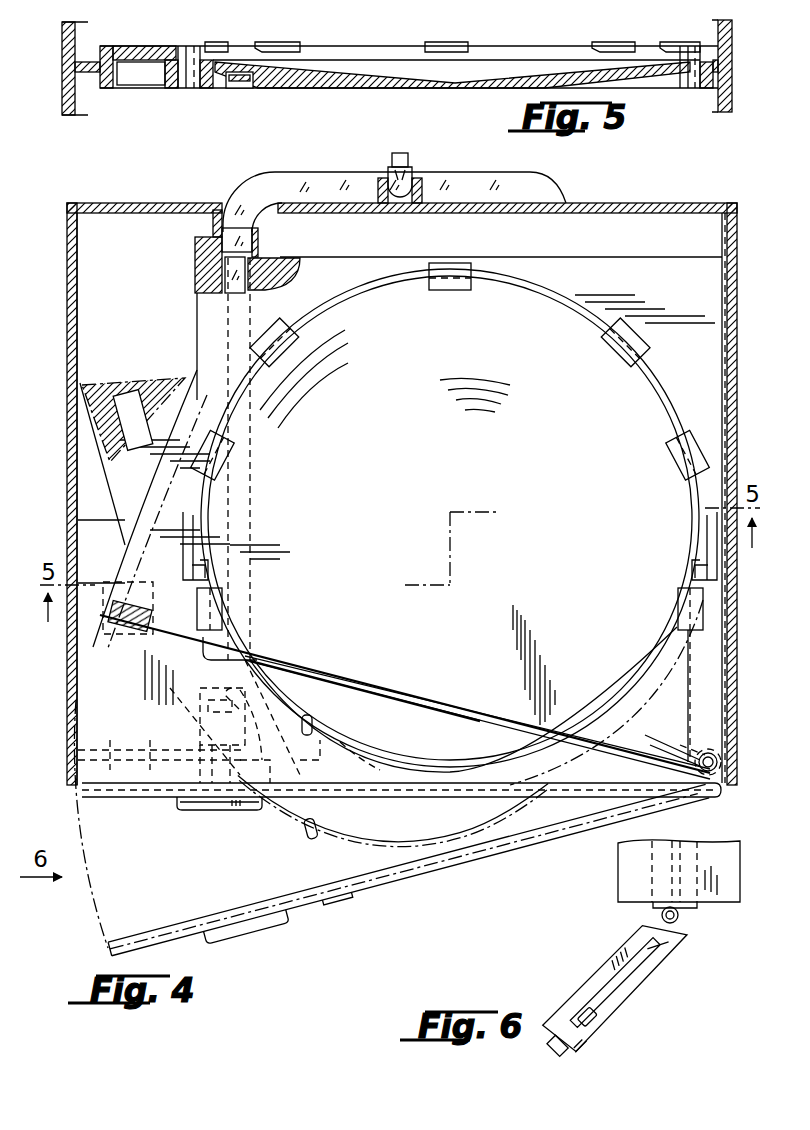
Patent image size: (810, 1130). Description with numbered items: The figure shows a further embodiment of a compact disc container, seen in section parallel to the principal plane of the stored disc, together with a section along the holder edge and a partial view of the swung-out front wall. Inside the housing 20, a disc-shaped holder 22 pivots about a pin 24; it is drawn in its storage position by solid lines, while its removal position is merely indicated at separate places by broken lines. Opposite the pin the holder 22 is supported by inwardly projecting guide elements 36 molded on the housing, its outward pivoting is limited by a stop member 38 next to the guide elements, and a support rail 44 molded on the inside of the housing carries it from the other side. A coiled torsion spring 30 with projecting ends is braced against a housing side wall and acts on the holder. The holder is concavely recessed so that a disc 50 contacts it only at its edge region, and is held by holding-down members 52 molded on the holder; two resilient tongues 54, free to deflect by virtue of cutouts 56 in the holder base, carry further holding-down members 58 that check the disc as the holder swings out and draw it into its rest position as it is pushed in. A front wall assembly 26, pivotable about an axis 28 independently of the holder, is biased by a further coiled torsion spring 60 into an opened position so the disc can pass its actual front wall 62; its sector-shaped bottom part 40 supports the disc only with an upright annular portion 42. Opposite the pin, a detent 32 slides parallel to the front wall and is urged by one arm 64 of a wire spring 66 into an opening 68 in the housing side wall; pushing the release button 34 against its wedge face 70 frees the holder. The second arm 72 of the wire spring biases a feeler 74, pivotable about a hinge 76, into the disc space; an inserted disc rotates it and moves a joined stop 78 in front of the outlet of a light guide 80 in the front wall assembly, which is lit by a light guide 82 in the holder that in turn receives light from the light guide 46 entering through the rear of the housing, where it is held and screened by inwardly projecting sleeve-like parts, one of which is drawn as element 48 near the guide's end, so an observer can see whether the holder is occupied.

In FIG. 5, the housing 20 is at (735, 102).
In FIG. 4, the housing 20 is at (695, 201).
In FIG. 6, the housing 20 is at (612, 866).
In FIG. 5, the holder 22 is at (500, 88).
In FIG. 4, the holder 22 is at (606, 255).
In FIG. 6, the holder 22 is at (700, 860).
In FIG. 4, the pin 24 is at (710, 750).
In FIG. 4, the front wall assembly 26 is at (374, 786).
In FIG. 6, the front wall assembly 26 is at (636, 978).
In FIG. 4, the axis 28 is at (250, 652).
In FIG. 4, the coiled torsion spring 30 is at (664, 745).
In FIG. 4, the detent 32 is at (110, 742).
In FIG. 6, the detent 32 is at (582, 1008).
In FIG. 4, the release button 34 is at (223, 803).
In FIG. 6, the release button 34 is at (549, 1048).
In FIG. 5, the guide elements 36 is at (88, 65).
In FIG. 4, the guide elements 36 is at (95, 526).
In FIG. 4, the stop member 38 is at (95, 430).
In FIG. 4, the sector-shaped bottom part 40 is at (410, 715).
In FIG. 4, the upright annular portion 42 is at (435, 768).
In FIG. 5, the support rail 44 is at (720, 66).
In FIG. 4, the support rail 44 is at (720, 232).
In FIG. 4, the light guide 46 is at (322, 188).
In FIG. 4, the light guide end 48 is at (253, 244).
In FIG. 4, the disc 50 is at (628, 692).
In FIG. 5, the holding-down members 52 is at (226, 42).
In FIG. 4, the holding-down members 52 is at (450, 288).
In FIG. 5, the resilient tongues 54 is at (194, 88).
In FIG. 4, the resilient tongues 54 is at (186, 546).
In FIG. 5, the cutouts 56 is at (184, 88).
In FIG. 4, the cutouts 56 is at (196, 520).
In FIG. 5, the holding-down members 58 is at (190, 46).
In FIG. 4, the holding-down members 58 is at (202, 578).
In FIG. 4, the coiled torsion spring 60 is at (140, 640).
In FIG. 6, the coiled torsion spring 60 is at (680, 918).
In FIG. 4, the front wall 62 is at (430, 788).
In FIG. 6, the front wall 62 is at (576, 1050).
In FIG. 4, the arm of wire spring 64 is at (290, 712).
In FIG. 4, the wire spring 66 is at (215, 697).
In FIG. 4, the opening 68 is at (80, 750).
In FIG. 4, the wedge face 70 is at (200, 768).
In FIG. 4, the second arm of wire spring 72 is at (316, 722).
In FIG. 4, the feeler 74 is at (300, 722).
In FIG. 4, the hinge 76 is at (342, 742).
In FIG. 4, the stop 78 is at (315, 758).
In FIG. 4, the light guide 80 is at (252, 688).
In FIG. 5, the light guide 82 is at (245, 90).
In FIG. 4, the light guide 82 is at (248, 472).